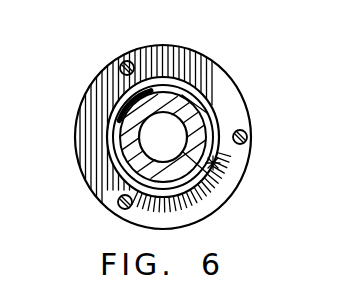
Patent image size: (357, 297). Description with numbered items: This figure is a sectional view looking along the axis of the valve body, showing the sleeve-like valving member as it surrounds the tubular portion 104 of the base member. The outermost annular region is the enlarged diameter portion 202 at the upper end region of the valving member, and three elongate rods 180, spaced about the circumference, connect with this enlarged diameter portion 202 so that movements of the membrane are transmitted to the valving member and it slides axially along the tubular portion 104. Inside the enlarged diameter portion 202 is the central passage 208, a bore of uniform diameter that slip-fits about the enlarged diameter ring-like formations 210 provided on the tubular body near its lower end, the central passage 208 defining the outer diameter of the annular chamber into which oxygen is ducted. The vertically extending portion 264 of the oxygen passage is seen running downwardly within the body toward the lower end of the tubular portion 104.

The tubular portion 104 is at (213, 163).
The elongate rods 180 is at (121, 62).
The enlarged diameter portion 202 is at (208, 66).
The central passage 208 is at (195, 95).
The ring-like formations 210 is at (116, 159).
The vertically extending portion 264 is at (184, 131).